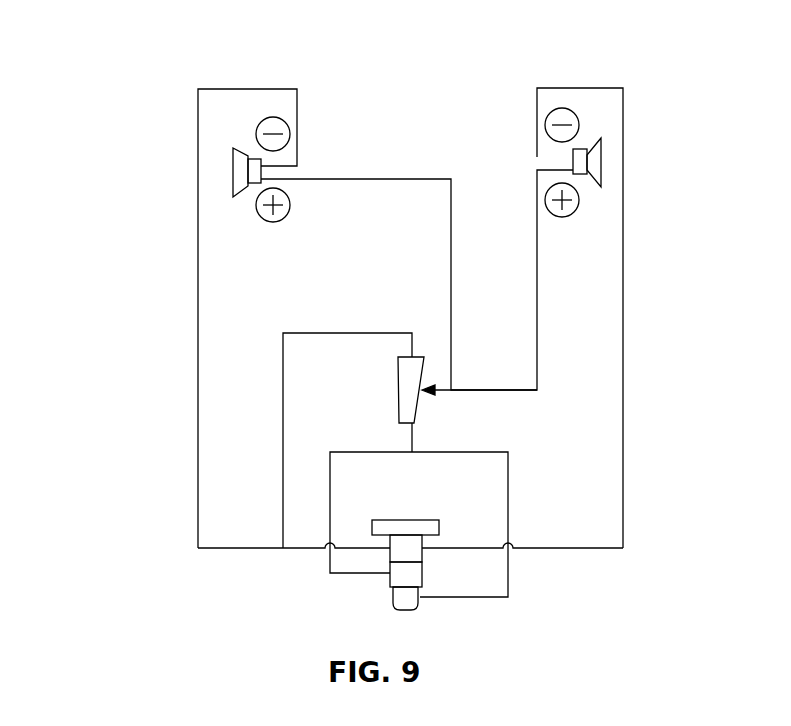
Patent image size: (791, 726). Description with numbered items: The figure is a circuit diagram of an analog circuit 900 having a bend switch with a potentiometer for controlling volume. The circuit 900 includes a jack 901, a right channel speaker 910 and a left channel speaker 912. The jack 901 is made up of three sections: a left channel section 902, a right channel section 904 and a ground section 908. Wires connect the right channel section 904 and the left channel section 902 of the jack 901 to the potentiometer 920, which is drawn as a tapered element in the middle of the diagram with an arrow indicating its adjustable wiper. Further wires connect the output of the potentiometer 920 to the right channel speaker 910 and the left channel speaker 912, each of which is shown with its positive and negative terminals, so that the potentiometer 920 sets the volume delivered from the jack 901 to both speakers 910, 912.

The circuit 900 is at (137, 38).
The right channel speaker 910 is at (233, 172).
The left channel speaker 912 is at (601, 163).
The potentiometer 920 is at (398, 390).
The jack 901 is at (407, 518).
The ground section 908 is at (425, 548).
The right channel section 904 is at (425, 578).
The left channel section 902 is at (405, 612).